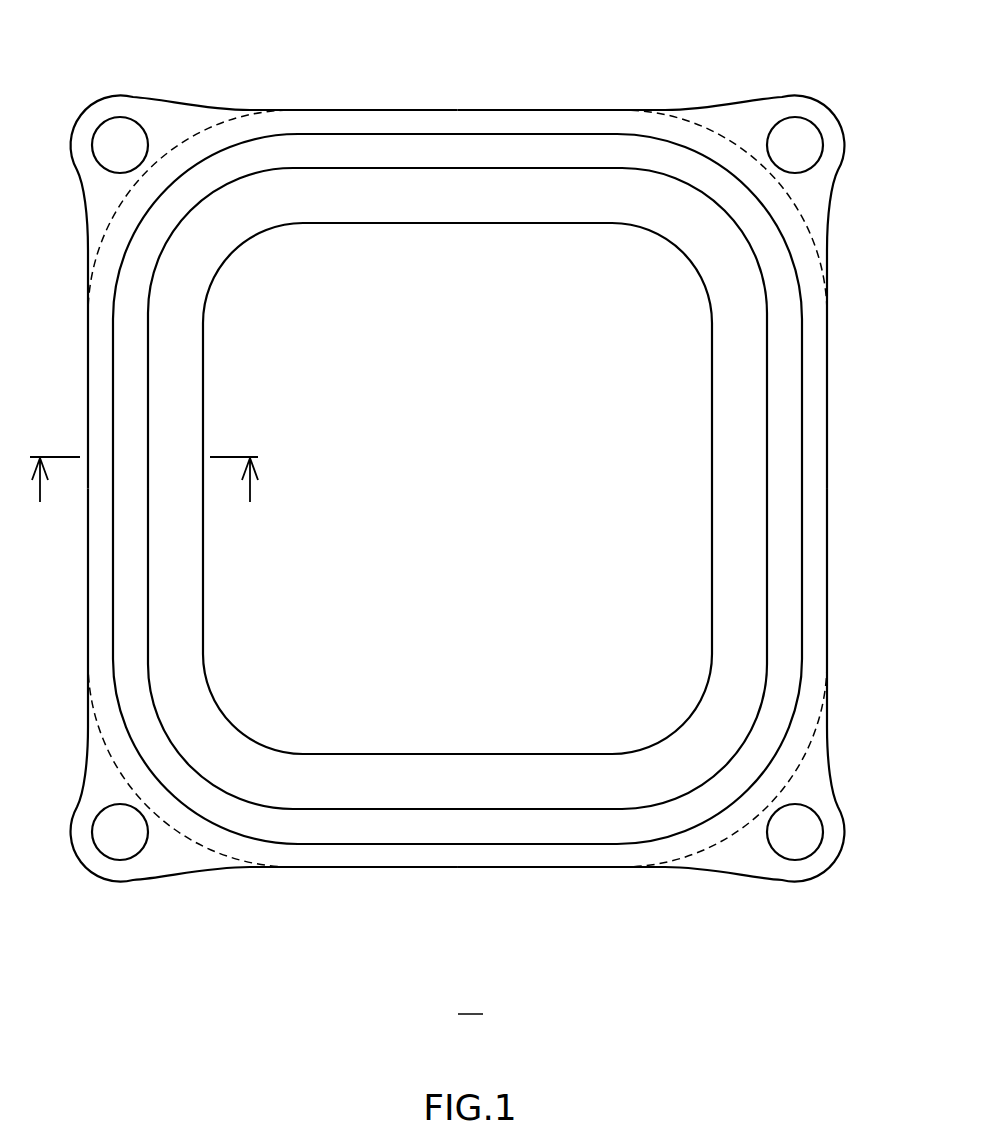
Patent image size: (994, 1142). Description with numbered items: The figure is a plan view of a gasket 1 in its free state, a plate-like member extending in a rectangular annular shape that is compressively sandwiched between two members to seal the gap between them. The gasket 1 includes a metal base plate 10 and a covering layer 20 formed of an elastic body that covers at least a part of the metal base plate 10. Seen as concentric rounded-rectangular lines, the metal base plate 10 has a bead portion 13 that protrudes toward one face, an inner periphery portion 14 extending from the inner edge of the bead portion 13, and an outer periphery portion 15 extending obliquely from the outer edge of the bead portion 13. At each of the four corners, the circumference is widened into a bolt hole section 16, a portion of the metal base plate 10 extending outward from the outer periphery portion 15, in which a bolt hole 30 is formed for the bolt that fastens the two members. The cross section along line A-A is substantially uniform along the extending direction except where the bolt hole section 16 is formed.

The gasket 1 is at (472, 510).
The metal base plate 10 is at (698, 402).
The bead portion 13 is at (783, 452).
The inner periphery portion 14 is at (740, 550).
The outer periphery portion 15 is at (812, 585).
The bolt hole section 16 is at (98, 122).
The covering layer 20 is at (467, 127).
The bolt hole 30 is at (120, 143).